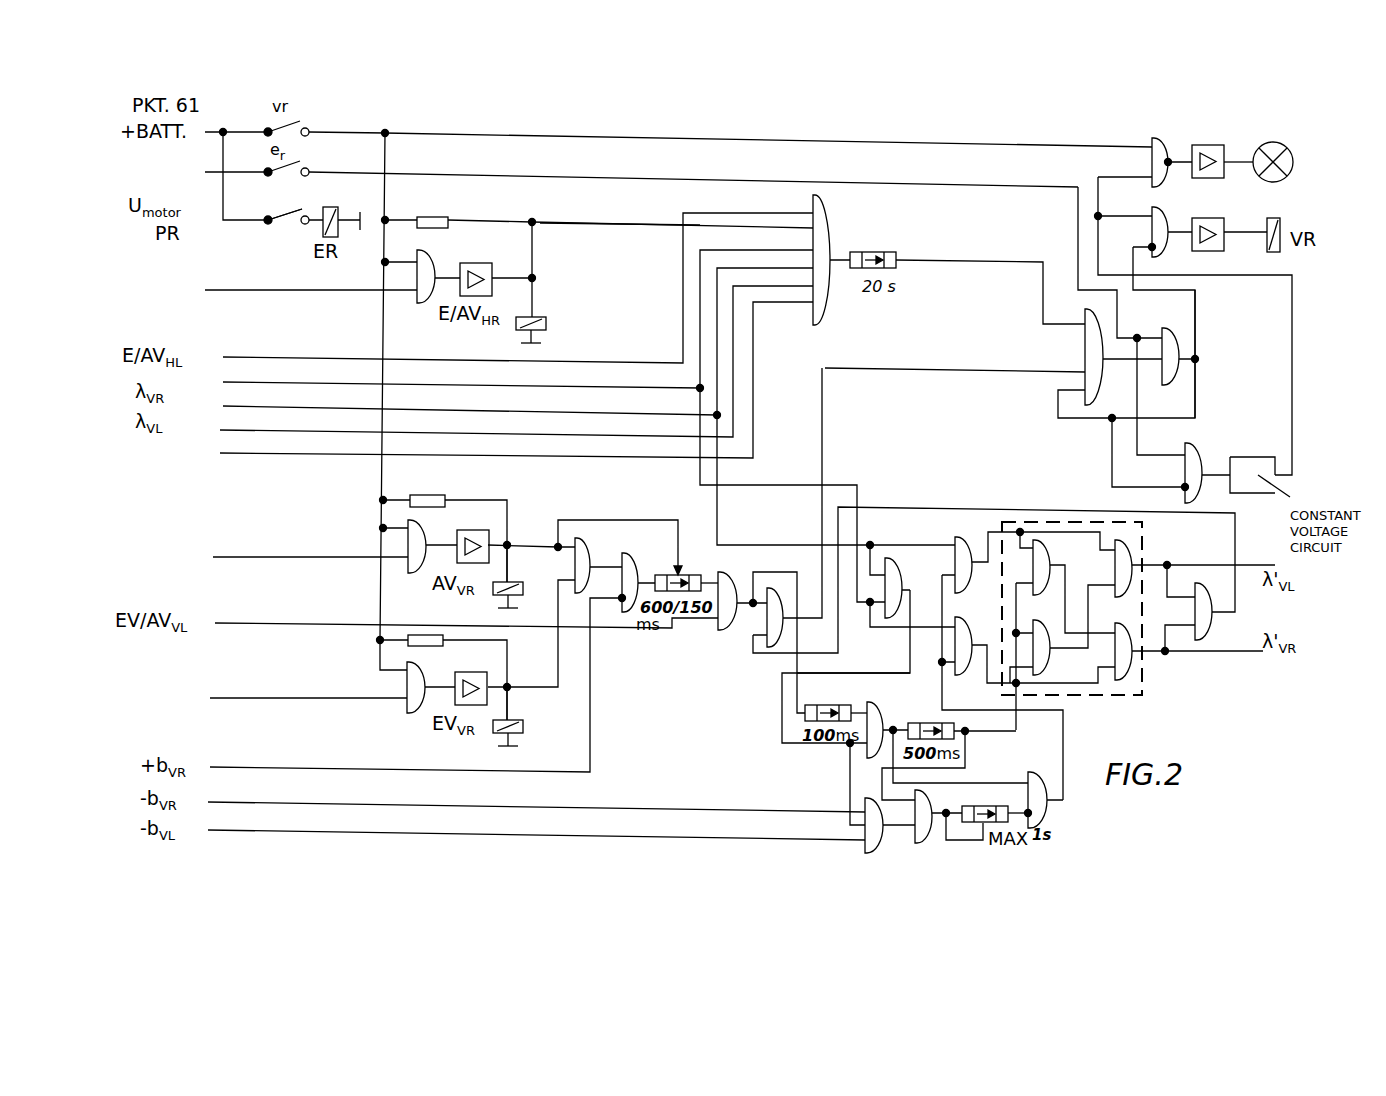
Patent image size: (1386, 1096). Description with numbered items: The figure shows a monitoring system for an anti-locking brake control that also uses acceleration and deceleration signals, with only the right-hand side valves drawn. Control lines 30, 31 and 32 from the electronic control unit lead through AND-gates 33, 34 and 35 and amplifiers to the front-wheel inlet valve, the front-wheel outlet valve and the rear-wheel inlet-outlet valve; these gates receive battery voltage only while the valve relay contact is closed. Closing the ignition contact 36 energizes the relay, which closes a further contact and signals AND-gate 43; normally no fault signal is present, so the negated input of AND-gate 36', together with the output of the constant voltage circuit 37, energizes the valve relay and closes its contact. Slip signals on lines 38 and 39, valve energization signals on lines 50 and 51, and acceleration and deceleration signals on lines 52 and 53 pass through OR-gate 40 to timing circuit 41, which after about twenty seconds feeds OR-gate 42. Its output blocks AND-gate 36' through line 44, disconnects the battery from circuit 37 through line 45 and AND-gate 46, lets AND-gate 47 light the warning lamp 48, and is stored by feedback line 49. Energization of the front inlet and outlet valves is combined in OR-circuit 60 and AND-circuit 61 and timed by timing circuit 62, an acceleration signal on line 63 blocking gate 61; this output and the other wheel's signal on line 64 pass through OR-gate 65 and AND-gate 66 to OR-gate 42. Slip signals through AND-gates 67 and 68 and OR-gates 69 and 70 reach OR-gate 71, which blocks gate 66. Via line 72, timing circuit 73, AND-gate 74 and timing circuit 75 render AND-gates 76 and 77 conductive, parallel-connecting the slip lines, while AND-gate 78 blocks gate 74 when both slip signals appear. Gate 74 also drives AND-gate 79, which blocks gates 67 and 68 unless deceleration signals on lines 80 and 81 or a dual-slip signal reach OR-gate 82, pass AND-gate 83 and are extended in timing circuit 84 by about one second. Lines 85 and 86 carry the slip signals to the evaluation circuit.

The control line 30 is at (258, 698).
The control line 31 is at (258, 557).
The control line 32 is at (257, 291).
The AND-gate 33 is at (412, 710).
The AND-gate 34 is at (412, 570).
The AND-gate 35 is at (432, 258).
The contact 36 is at (284, 236).
The AND-gate 36' is at (1188, 301).
The constant voltage circuit 37 is at (1250, 456).
The slip line 38 is at (277, 382).
The slip line 39 is at (267, 406).
The OR-gate 40 is at (832, 226).
The timing circuit 41 is at (878, 250).
The OR-gate 42 is at (1085, 356).
The AND-gate 43 is at (1170, 348).
The line 44 is at (1195, 311).
The line 45 is at (1112, 470).
The AND-gate 46 is at (1206, 443).
The AND-gate 47 is at (1165, 148).
The warning lamp 48 is at (1266, 146).
The feedback line 49 is at (1075, 418).
The line 50 is at (612, 226).
The line 51 is at (330, 350).
The line 52 is at (308, 430).
The line 53 is at (352, 453).
The OR-circuit 60 is at (590, 556).
The AND-circuit 61 is at (632, 566).
The timing circuit 62 is at (681, 575).
The line 63 is at (288, 767).
The line 64 is at (255, 623).
The OR-gate 65 is at (722, 622).
The AND-gate 66 is at (762, 623).
The AND-gate 67 is at (952, 538).
The AND-gate 68 is at (966, 678).
The OR-gate 69 is at (1133, 561).
The OR-gate 70 is at (1133, 662).
The OR-gate 71 is at (1221, 624).
The line 72 is at (790, 663).
The timing circuit 73 is at (832, 696).
The AND-gate 74 is at (875, 708).
The timing circuit 75 is at (935, 713).
The AND-gate 76 is at (1045, 560).
The AND-gate 77 is at (1042, 655).
The AND-gate 78 is at (897, 590).
The AND-gate 79 is at (1035, 778).
The line 80 is at (315, 802).
The line 81 is at (347, 832).
The OR-gate 82 is at (864, 851).
The AND-gate 83 is at (925, 845).
The timing circuit 84 is at (985, 808).
The line 85 is at (1255, 563).
The line 86 is at (1240, 658).